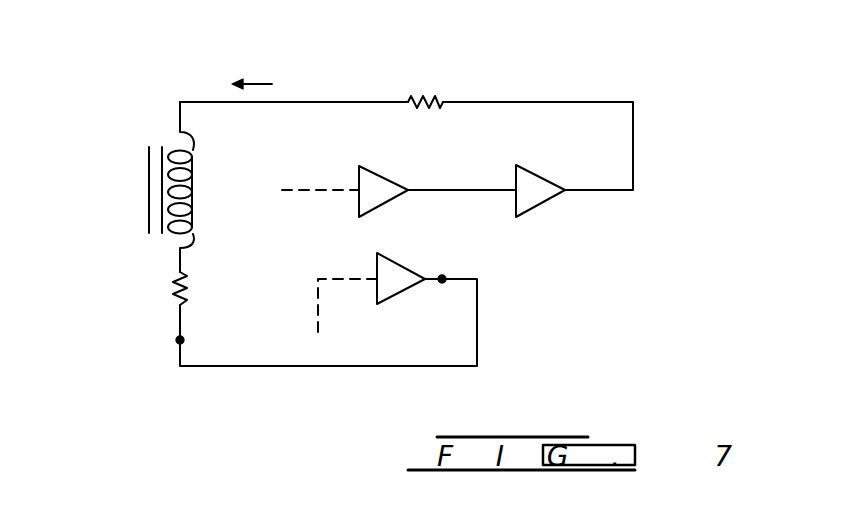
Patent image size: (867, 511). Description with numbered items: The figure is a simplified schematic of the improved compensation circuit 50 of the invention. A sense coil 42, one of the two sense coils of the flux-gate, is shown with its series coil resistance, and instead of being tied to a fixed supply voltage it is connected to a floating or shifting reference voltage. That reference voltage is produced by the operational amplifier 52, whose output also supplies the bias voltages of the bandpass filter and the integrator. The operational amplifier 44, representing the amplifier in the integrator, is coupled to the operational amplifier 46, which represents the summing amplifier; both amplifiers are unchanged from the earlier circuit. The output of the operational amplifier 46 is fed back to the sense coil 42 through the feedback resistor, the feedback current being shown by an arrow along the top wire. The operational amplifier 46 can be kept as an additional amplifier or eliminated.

The sense coil 42 is at (193, 175).
The operational amplifier 44 is at (372, 182).
The operational amplifier 46 is at (535, 197).
The improved compensation circuit 50 is at (680, 126).
The operational amplifier 52 is at (390, 290).